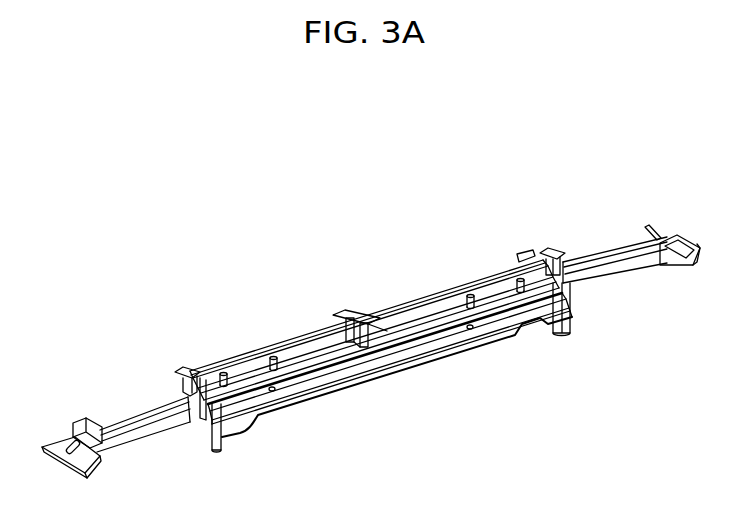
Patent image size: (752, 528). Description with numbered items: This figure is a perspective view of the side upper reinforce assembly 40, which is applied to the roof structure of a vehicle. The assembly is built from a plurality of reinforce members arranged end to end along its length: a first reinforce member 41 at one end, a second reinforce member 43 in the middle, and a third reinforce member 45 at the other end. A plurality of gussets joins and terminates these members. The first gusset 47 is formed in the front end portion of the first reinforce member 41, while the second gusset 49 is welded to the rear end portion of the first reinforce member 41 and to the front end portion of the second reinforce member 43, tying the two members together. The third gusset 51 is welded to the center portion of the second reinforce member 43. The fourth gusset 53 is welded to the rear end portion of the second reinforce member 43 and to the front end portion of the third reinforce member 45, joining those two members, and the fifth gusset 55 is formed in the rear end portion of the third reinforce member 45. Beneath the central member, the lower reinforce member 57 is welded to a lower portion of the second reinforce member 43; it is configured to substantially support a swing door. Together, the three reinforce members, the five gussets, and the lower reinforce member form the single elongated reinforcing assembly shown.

The side upper reinforce assembly 40 is at (320, 166).
The first reinforce member 41 is at (140, 428).
The second reinforce member 43 is at (312, 362).
The third reinforce member 45 is at (610, 268).
The first gusset 47 is at (58, 433).
The second gusset 49 is at (183, 385).
The third gusset 51 is at (363, 319).
The fourth gusset 53 is at (543, 258).
The fifth gusset 55 is at (666, 228).
The lower reinforce member 57 is at (402, 350).